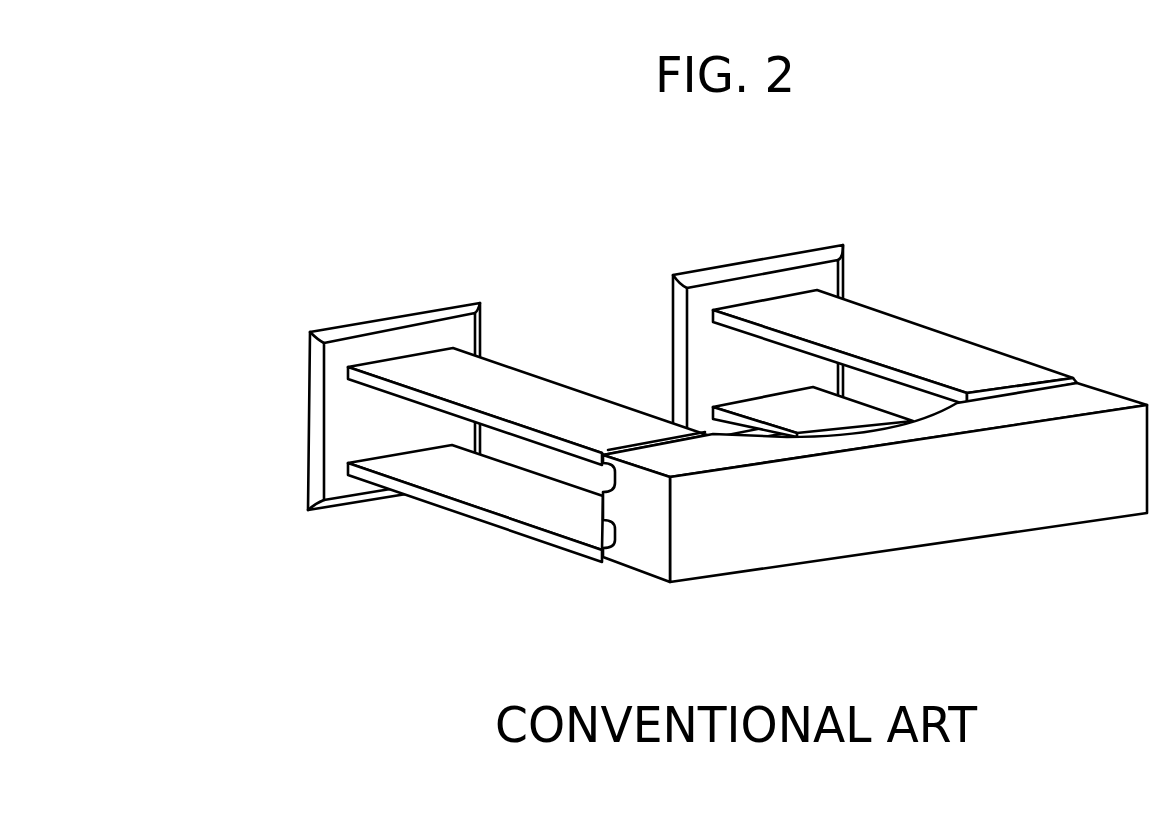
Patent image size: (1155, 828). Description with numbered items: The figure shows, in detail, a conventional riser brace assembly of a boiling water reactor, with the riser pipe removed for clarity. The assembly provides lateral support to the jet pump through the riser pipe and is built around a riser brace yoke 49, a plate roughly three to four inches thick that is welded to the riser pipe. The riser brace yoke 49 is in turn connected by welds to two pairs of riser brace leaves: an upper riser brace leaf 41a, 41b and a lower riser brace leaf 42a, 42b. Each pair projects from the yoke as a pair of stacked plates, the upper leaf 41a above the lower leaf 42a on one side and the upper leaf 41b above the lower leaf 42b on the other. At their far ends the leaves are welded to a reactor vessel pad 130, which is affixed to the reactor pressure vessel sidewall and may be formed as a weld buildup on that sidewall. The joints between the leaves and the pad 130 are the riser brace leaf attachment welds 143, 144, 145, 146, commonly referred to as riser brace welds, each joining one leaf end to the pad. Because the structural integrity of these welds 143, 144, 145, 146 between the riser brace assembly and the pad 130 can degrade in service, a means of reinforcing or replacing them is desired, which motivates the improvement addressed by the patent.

The reactor vessel pad 130 is at (655, 390).
The riser brace leaf attachment weld 143 is at (757, 300).
The riser brace leaf attachment weld 144 is at (420, 352).
The riser brace leaf attachment weld 145 is at (743, 403).
The riser brace leaf attachment weld 146 is at (385, 453).
The upper riser brace leaf 41a is at (541, 437).
The upper riser brace leaf 41b is at (908, 328).
The lower riser brace leaf 42a is at (475, 512).
The lower riser brace leaf 42b is at (873, 420).
The riser brace yoke 49 is at (900, 522).